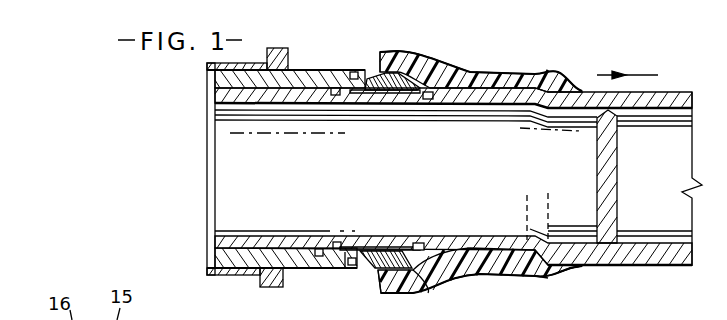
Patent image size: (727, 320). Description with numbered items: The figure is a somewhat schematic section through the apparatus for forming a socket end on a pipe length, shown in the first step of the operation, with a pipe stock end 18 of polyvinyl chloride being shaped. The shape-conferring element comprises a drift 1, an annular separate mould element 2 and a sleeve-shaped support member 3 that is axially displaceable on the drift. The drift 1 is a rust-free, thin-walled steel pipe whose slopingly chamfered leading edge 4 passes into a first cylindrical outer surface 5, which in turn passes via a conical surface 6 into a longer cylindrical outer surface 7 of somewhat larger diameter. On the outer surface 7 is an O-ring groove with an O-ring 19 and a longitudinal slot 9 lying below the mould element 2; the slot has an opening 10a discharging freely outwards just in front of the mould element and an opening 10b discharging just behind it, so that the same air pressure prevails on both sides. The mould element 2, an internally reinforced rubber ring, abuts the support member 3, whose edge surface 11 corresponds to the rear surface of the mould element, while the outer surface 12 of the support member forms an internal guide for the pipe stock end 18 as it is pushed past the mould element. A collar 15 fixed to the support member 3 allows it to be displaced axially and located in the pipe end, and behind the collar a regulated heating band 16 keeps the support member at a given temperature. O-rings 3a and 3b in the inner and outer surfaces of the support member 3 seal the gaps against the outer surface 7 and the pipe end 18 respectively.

The drift 1 is at (517, 100).
The annular separate mould element 2 is at (397, 72).
The sleeve-shaped support member 3 is at (308, 70).
The O-ring 3a is at (319, 247).
The O-ring 3b is at (352, 268).
The leading edge 4 is at (608, 262).
The first cylindrical outer surface 5 is at (566, 267).
The conical surface 6 is at (535, 272).
The cylindrical outer surface 7 is at (471, 272).
The longitudinal slot 9 is at (383, 271).
The opening 10a is at (415, 272).
The opening 10b is at (345, 262).
The edge surface 11 is at (365, 70).
The outer surface 12 is at (333, 66).
The collar 15 is at (270, 47).
The heating band 16 is at (207, 80).
The pipe stock end 18 is at (467, 73).
The O-ring 19 is at (423, 243).